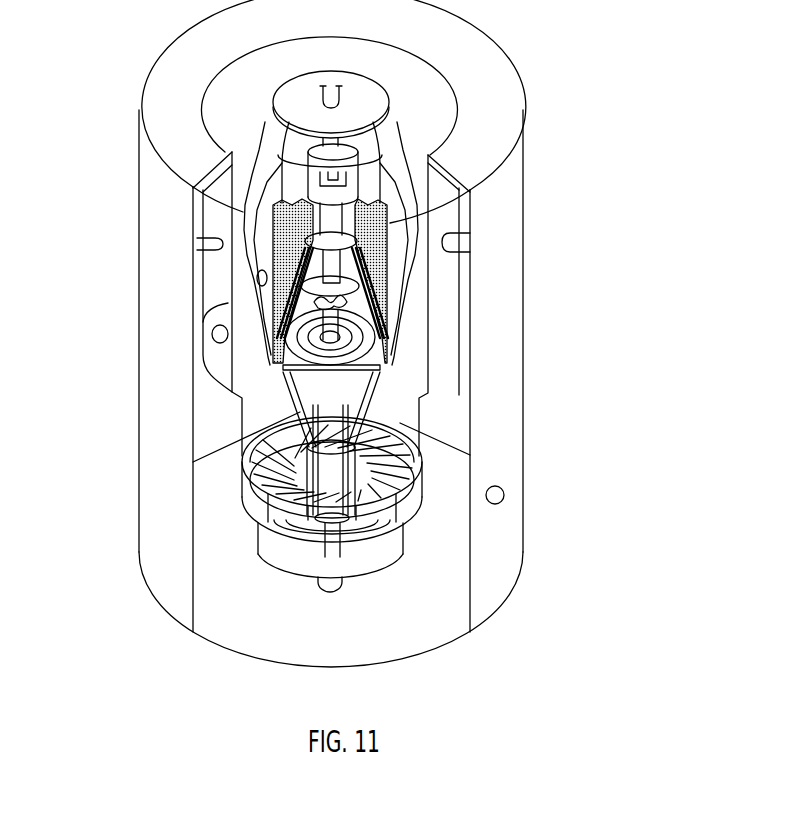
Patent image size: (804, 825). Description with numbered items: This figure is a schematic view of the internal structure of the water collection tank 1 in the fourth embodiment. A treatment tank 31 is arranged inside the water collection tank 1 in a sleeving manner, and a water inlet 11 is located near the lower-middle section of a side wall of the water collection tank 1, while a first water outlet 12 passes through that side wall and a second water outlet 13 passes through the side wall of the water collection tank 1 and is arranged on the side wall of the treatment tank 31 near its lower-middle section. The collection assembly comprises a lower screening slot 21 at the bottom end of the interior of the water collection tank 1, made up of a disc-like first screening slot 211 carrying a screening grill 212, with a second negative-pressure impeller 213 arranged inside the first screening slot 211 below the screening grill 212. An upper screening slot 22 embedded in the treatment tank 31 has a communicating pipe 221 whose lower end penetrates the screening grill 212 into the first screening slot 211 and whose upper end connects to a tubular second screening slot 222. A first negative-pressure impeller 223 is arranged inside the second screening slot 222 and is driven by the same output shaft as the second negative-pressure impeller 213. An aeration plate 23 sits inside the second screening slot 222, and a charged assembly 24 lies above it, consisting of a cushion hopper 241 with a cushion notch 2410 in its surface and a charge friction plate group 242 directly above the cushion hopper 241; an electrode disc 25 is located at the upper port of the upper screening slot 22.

The water collection tank 1 is at (148, 357).
The water inlet 11 is at (505, 502).
The first water outlet 12 is at (262, 275).
The second water outlet 13 is at (280, 374).
The treatment tank 31 is at (222, 216).
The lower screening slot 21 is at (263, 532).
The first screening slot 211 is at (403, 557).
The screening grill 212 is at (372, 484).
The second negative-pressure impeller 213 is at (308, 547).
The upper screening slot 22 is at (385, 328).
The communicating pipe 221 is at (345, 445).
The second screening slot 222 is at (388, 341).
The first negative-pressure impeller 223 is at (378, 281).
The aeration plate 23 is at (300, 394).
The charged assembly 24 is at (385, 228).
The cushion hopper 241 is at (382, 269).
The charge friction plate group 242 is at (205, 247).
The cushion notch 2410 is at (300, 322).
The electrode disc 25 is at (372, 114).